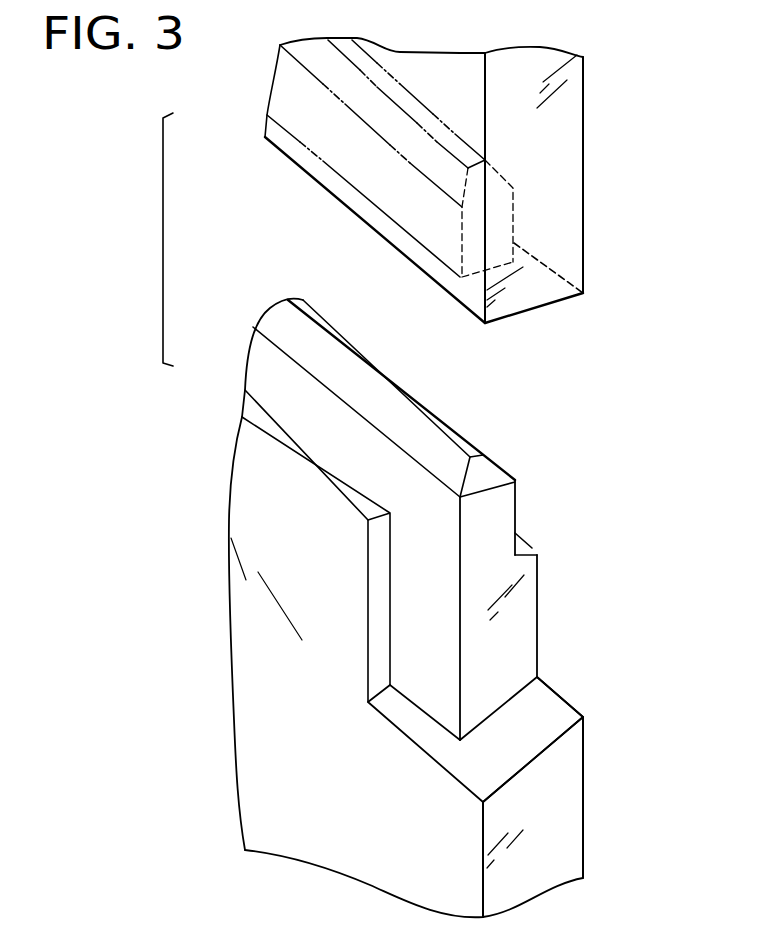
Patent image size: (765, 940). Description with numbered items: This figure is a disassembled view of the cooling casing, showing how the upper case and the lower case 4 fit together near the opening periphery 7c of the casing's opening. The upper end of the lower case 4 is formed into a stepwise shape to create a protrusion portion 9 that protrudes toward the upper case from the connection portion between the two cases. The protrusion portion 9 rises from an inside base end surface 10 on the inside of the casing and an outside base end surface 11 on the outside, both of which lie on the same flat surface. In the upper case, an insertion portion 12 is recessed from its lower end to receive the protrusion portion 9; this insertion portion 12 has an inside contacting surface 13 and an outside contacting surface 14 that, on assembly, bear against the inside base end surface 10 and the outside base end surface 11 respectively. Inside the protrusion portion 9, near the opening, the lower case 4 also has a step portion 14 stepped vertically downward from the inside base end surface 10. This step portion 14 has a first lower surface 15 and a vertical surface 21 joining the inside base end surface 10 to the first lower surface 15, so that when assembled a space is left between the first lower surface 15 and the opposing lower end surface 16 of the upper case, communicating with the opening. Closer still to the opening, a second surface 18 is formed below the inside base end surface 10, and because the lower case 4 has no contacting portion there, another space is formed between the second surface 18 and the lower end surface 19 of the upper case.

The lower case 4 is at (245, 697).
The opening periphery 7c is at (563, 118).
The protrusion portion 9 is at (540, 500).
The inside base end surface 10 is at (327, 475).
The outside base end surface 11 is at (532, 546).
The insertion portion 12 is at (350, 148).
The inside contacting surface 13 is at (293, 152).
The step portion 14 is at (522, 246).
The first lower surface 15 is at (390, 711).
The lower end surface 16 is at (388, 246).
The second surface 18 is at (548, 737).
The lower end surface 19 is at (553, 301).
The vertical surface 21 is at (373, 562).